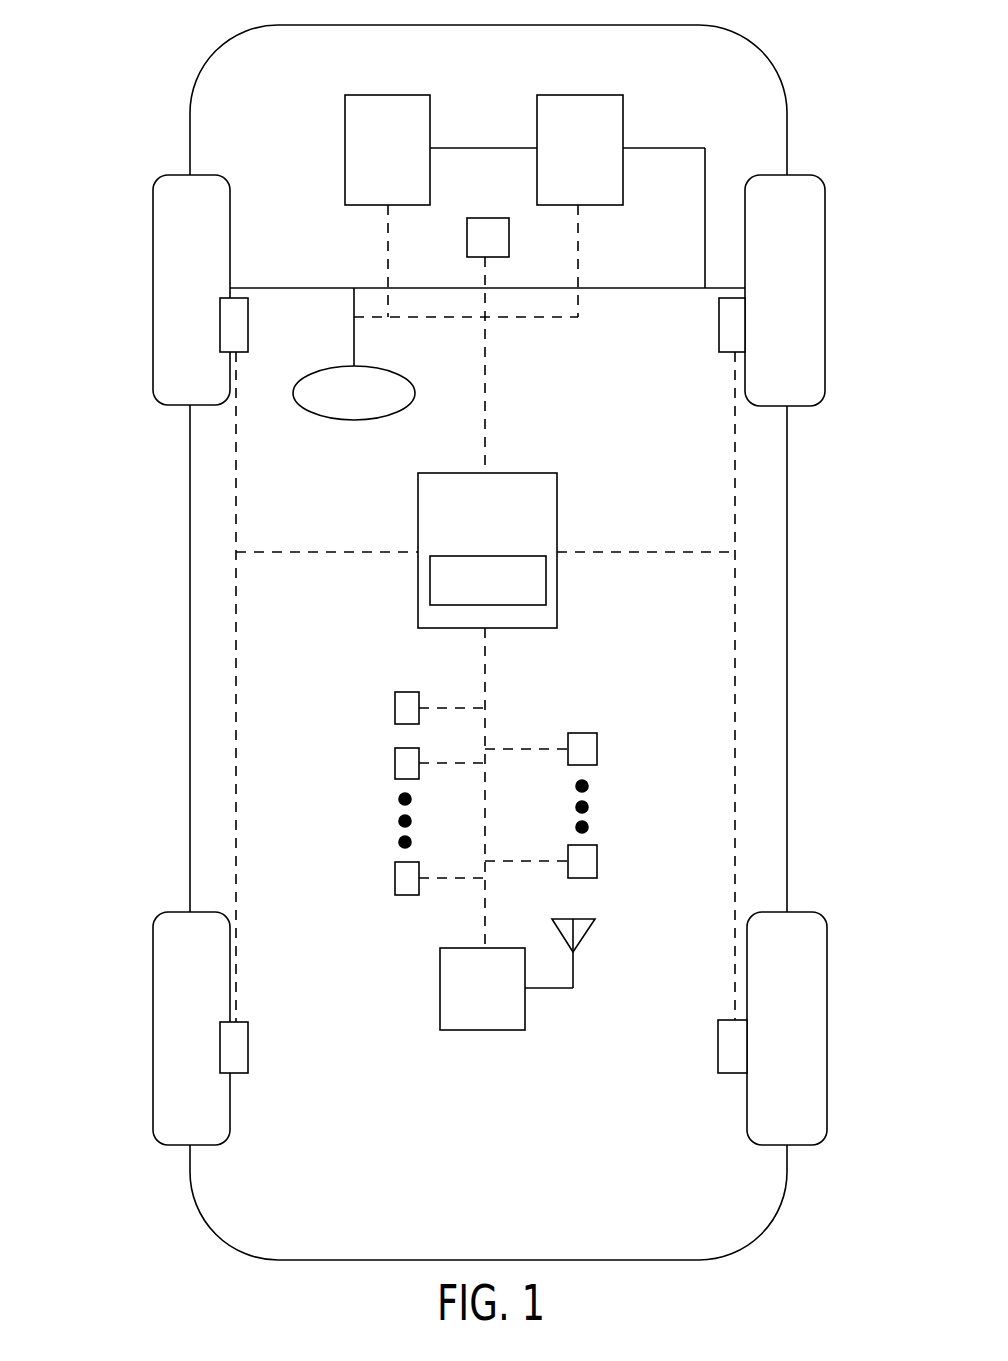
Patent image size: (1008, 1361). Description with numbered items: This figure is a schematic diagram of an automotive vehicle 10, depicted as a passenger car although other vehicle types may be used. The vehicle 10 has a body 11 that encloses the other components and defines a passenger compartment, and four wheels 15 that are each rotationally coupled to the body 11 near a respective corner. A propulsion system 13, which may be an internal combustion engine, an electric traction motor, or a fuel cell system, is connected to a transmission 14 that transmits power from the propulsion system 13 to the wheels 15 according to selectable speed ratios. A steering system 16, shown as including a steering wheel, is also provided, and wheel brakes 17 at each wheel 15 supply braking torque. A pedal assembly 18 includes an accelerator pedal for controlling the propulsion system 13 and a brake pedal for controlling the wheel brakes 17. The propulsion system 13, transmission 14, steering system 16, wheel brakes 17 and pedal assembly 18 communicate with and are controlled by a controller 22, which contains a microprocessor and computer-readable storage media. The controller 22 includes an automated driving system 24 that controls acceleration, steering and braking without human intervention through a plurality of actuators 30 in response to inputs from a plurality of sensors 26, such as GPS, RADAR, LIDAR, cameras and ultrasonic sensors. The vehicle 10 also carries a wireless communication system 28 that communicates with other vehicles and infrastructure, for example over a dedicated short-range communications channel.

The automotive vehicle 10 is at (448, 630).
The body 11 is at (787, 592).
The propulsion system 13 is at (345, 157).
The transmission 14 is at (623, 107).
The wheels 15 is at (230, 215).
The steering system 16 is at (345, 419).
The wheel brakes 17 is at (248, 342).
The pedal assembly 18 is at (487, 218).
The controller 22 is at (517, 591).
The automated driving system 24 is at (517, 606).
The sensors 26 is at (395, 700).
The wireless communication system 28 is at (495, 1030).
The actuators 30 is at (597, 749).